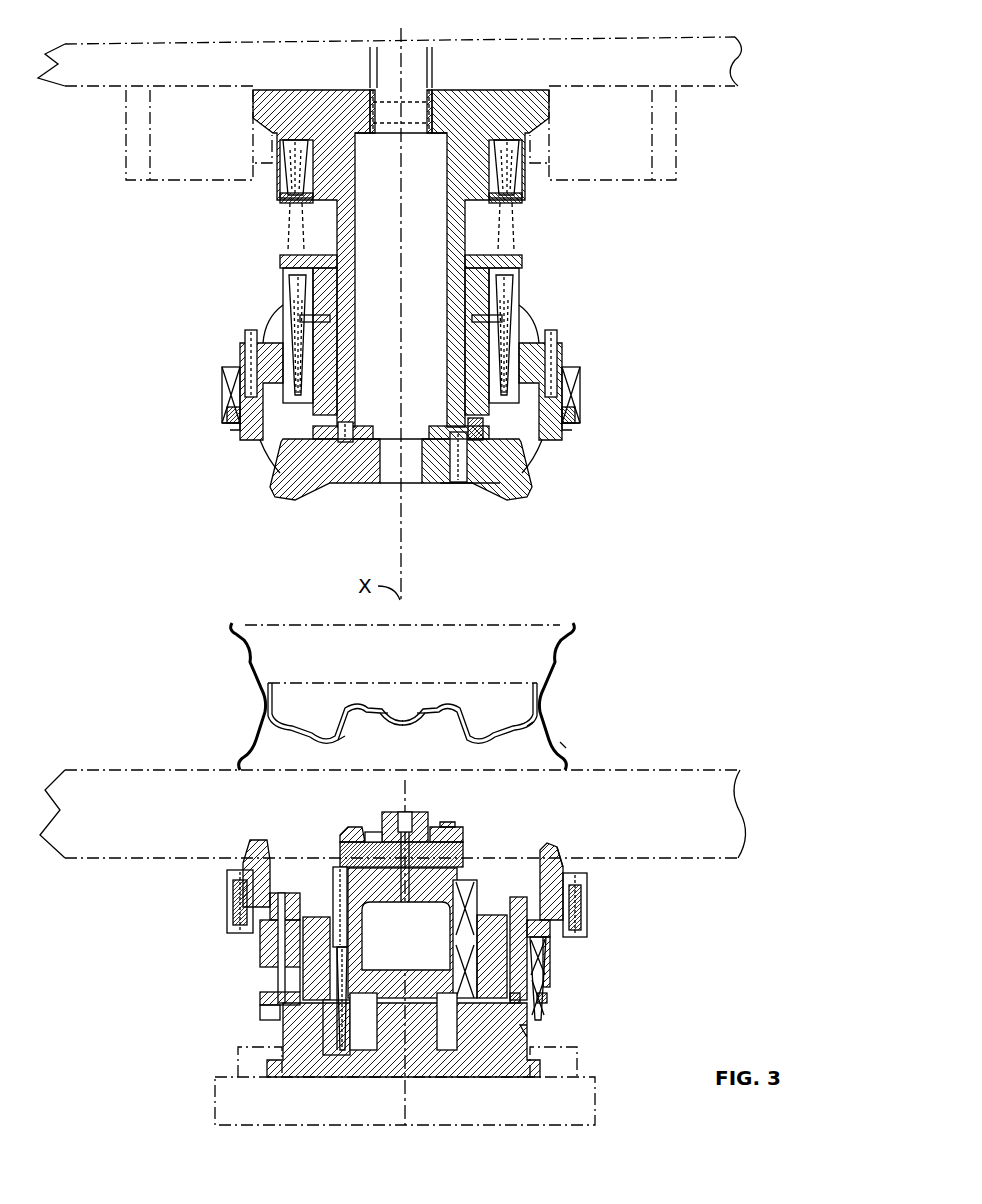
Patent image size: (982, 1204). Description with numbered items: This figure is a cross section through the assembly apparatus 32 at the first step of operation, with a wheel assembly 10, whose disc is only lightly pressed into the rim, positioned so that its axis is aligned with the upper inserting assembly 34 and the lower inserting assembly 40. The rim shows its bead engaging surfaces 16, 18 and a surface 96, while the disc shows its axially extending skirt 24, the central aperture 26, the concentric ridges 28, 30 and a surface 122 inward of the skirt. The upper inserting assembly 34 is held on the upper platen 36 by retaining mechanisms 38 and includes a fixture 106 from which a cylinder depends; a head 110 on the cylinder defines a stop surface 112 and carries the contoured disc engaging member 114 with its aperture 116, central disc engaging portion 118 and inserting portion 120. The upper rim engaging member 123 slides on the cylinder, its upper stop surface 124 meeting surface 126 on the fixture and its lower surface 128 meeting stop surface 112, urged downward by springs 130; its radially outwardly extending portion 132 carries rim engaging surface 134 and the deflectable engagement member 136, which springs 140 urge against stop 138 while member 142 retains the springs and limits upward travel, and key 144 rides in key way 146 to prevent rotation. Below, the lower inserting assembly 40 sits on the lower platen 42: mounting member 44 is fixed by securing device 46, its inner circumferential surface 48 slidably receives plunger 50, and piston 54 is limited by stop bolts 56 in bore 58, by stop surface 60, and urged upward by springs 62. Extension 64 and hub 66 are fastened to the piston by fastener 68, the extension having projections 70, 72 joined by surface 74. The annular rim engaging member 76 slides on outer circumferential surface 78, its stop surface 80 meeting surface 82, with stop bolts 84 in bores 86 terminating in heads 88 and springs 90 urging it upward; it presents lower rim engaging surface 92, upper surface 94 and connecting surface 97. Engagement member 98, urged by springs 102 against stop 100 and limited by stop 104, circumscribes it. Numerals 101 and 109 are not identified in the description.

The wheel assembly 10 is at (452, 693).
The bead engaging surface 16 is at (573, 757).
The bead engaging surface 18 is at (567, 621).
The axially extending skirt 24 is at (547, 702).
The central aperture 26 is at (380, 710).
The concentric ridge 28 is at (435, 710).
The concentric ridge 30 is at (457, 710).
The apparatus 32 is at (400, 300).
The upper inserting assembly 34 is at (528, 227).
The upper platen 36 is at (710, 62).
The retaining mechanisms 38 is at (625, 183).
The lower inserting assembly 40 is at (451, 954).
The lower platen 42 is at (593, 1110).
The mounting member 44 is at (523, 1037).
The securing device 46 is at (570, 1070).
The inner circumferential surface 48 is at (337, 1042).
The plunger 50 is at (433, 1067).
The piston 54 is at (470, 863).
The stop bolts 56 is at (350, 940).
The bore 58 is at (337, 882).
The stop surface 60 is at (360, 1050).
The springs 62 is at (468, 908).
The extension 64 is at (462, 842).
The hub 66 is at (428, 812).
The fastener 68 is at (405, 818).
The projection 70 is at (463, 823).
The projection 72 is at (373, 830).
The surface 74 is at (360, 838).
The rim engaging member 76 is at (243, 968).
The outer circumferential surface 78 is at (280, 985).
The stop surface 80 is at (550, 977).
The surface 82 is at (543, 993).
The stop bolts 84 is at (270, 1008).
The bores 86 is at (275, 895).
The head 88 is at (250, 942).
The springs 90 is at (548, 953).
The lower rim engaging surface 92 is at (565, 868).
The upper surface 94 is at (543, 853).
The surface 96 is at (562, 747).
The surface 97 is at (563, 863).
The engagement member 98 is at (583, 885).
The stop 100 is at (247, 863).
The hub wall 101 is at (462, 232).
The springs 102 is at (225, 892).
The stop 104 is at (237, 925).
The fixture 106 is at (528, 95).
The central bore 109 is at (455, 273).
The head 110 is at (507, 440).
The stop surface 112 is at (297, 447).
The disc engaging member 114 is at (468, 495).
The aperture 116 is at (387, 481).
The central disc engaging portion 118 is at (360, 485).
The inserting portion 120 is at (525, 497).
The surface 122 is at (525, 727).
The upper rim engaging member 123 is at (480, 320).
The upper stop surface 124 is at (320, 250).
The surface 126 is at (320, 208).
The lower circumferentially extending surface 128 is at (512, 430).
The springs 130 is at (503, 280).
The radially outwardly extending portion 132 is at (553, 357).
The rim engaging surface 134 is at (248, 435).
The engagement member 136 is at (227, 420).
The stop 138 is at (230, 427).
The springs 140 is at (225, 387).
The member 142 is at (237, 373).
The key 144 is at (320, 319).
The key way 146 is at (342, 294).